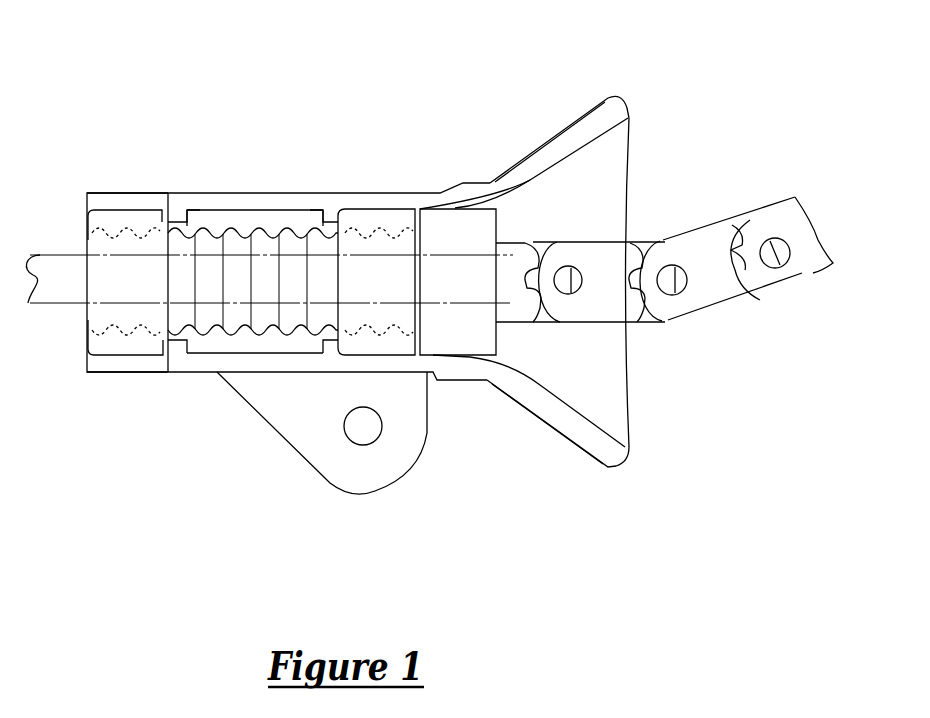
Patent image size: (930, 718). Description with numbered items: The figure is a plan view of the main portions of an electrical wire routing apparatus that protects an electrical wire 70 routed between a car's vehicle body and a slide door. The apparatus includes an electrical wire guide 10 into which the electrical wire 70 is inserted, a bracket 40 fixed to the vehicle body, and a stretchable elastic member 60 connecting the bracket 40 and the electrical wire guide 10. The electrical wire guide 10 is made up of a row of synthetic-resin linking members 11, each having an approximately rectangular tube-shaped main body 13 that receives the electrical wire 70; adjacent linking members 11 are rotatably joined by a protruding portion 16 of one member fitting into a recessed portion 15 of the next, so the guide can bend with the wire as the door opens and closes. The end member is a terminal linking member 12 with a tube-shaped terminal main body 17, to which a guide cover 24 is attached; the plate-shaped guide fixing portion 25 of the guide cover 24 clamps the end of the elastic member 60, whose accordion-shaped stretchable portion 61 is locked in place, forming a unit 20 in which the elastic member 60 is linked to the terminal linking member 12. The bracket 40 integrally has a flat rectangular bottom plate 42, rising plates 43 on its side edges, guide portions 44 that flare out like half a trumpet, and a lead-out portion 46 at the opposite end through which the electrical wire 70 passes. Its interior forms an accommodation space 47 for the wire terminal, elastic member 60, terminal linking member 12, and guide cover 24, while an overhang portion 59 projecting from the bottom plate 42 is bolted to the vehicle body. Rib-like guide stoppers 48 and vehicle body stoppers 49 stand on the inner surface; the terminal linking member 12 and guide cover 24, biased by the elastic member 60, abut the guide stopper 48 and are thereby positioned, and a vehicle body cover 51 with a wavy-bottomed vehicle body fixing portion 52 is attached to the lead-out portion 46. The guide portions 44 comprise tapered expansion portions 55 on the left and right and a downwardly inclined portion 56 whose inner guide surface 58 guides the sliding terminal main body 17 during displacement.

The electrical wire guide 10 is at (790, 200).
The linking member 11 is at (708, 307).
The terminal linking member 12 is at (515, 247).
The main body 13 is at (707, 250).
The recessed portion 15 is at (672, 267).
The protruding portion 16 is at (668, 292).
The terminal main body 17 is at (460, 232).
The unit 20 is at (470, 357).
The guide cover 24 is at (355, 211).
The guide fixing portion 25 is at (382, 220).
The bracket 40 is at (420, 195).
The bottom plate 42 is at (212, 350).
The rising plate 43 is at (202, 197).
The guide portion 44 is at (597, 95).
The lead-out portion 46 is at (87, 205).
The accommodation space 47 is at (148, 222).
The guide stopper 48 is at (327, 222).
The vehicle body stopper 49 is at (192, 220).
The vehicle body cover 51 is at (87, 342).
The vehicle body fixing portion 52 is at (93, 317).
The expansion portion 55 is at (563, 127).
The inclined portion 56 is at (627, 168).
The guide surface 58 is at (600, 380).
The overhang portion 59 is at (362, 477).
The elastic member 60 is at (270, 232).
The stretchable portion 61 is at (225, 233).
The electrical wire 70 is at (53, 260).